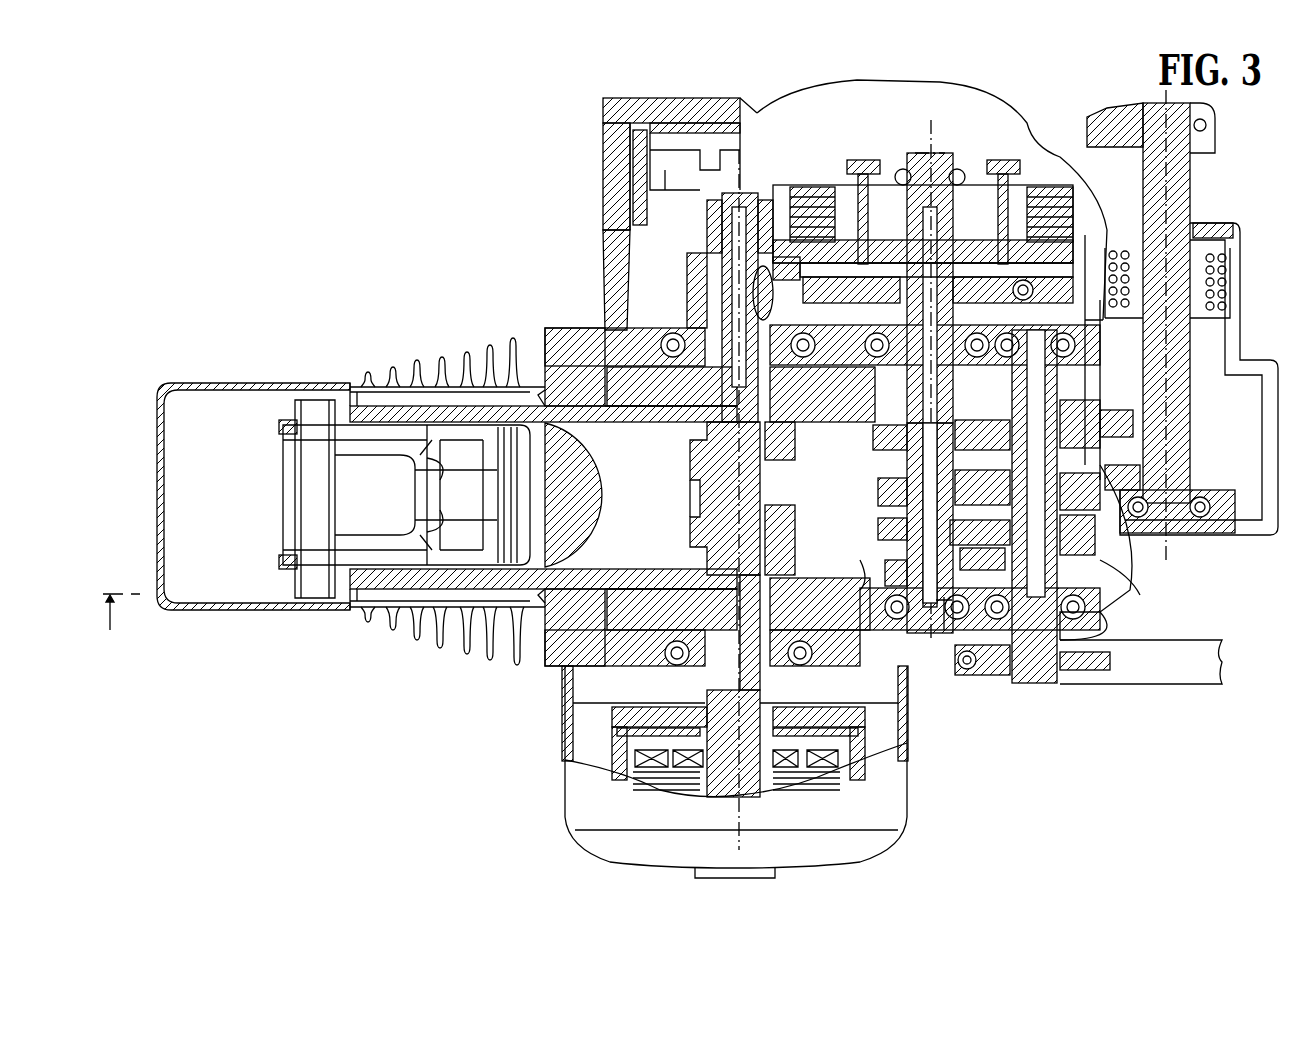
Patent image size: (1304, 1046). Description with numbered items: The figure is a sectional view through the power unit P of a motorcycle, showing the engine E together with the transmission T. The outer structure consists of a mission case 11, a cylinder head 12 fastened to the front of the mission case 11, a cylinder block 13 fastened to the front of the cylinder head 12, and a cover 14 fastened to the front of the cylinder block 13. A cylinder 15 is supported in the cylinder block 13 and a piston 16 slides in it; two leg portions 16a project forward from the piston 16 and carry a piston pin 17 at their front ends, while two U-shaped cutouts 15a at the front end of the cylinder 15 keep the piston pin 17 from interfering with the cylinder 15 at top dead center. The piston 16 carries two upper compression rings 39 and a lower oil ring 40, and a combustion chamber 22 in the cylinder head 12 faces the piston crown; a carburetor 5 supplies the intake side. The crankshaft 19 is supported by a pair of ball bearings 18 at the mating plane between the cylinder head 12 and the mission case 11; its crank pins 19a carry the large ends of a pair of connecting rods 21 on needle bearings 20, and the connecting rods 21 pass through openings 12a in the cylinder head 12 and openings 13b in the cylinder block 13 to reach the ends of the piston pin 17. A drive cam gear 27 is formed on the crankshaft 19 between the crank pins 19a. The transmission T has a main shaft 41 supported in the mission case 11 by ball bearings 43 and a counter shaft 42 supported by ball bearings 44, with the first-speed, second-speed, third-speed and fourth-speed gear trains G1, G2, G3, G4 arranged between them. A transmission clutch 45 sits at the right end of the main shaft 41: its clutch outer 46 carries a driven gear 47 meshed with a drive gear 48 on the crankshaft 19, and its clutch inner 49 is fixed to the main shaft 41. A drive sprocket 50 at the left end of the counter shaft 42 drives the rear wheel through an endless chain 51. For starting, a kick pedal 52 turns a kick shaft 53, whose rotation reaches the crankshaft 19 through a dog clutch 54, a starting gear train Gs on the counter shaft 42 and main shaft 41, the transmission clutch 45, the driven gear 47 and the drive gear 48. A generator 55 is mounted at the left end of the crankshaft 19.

The mission case 11 is at (1140, 594).
The cylinder head 12 is at (598, 326).
The openings 12a is at (536, 395).
The cylinder block 13 is at (432, 383).
The openings 13b is at (466, 383).
The cover 14 is at (228, 383).
The cylinder 15 is at (405, 405).
The U-shaped cutouts 15a is at (280, 430).
The piston 16 is at (423, 547).
The leg portions 16a is at (370, 540).
The piston pin 17 is at (305, 498).
The ball bearings 18 is at (674, 333).
The crankshaft 19 is at (705, 533).
The crank pins 19a is at (798, 422).
The needle bearings 20 is at (871, 358).
The connecting rods 21 is at (620, 422).
The combustion chamber 22 is at (592, 483).
The drive cam gear 27 is at (689, 502).
The compression rings 39 is at (505, 505).
The oil ring 40 is at (485, 468).
The main shaft 41 is at (941, 572).
The counter shaft 42 is at (1050, 683).
The ball bearings 43 is at (878, 358).
The ball bearings 44 is at (1108, 345).
The transmission clutch 45 is at (941, 147).
The clutch outer 46 is at (806, 267).
The driven gear 47 is at (1074, 283).
The drive gear 48 is at (687, 273).
The clutch inner 49 is at (894, 155).
The drive sprocket 50 is at (1101, 664).
The endless chain 51 is at (1161, 685).
The kick pedal 52 is at (1104, 118).
The kick shaft 53 is at (1186, 213).
The dog clutch 54 is at (1106, 430).
The generator 55 is at (883, 722).
The engine E is at (396, 325).
The power unit P is at (518, 268).
The transmission T is at (944, 633).
The starting gear train Gs is at (1224, 381).
The first-speed gear train G1 is at (877, 572).
The second-speed gear train G2 is at (878, 437).
The third-speed gear train G3 is at (877, 501).
The fourth-speed gear train G4 is at (878, 534).
The carburetor 5 is at (527, 625).